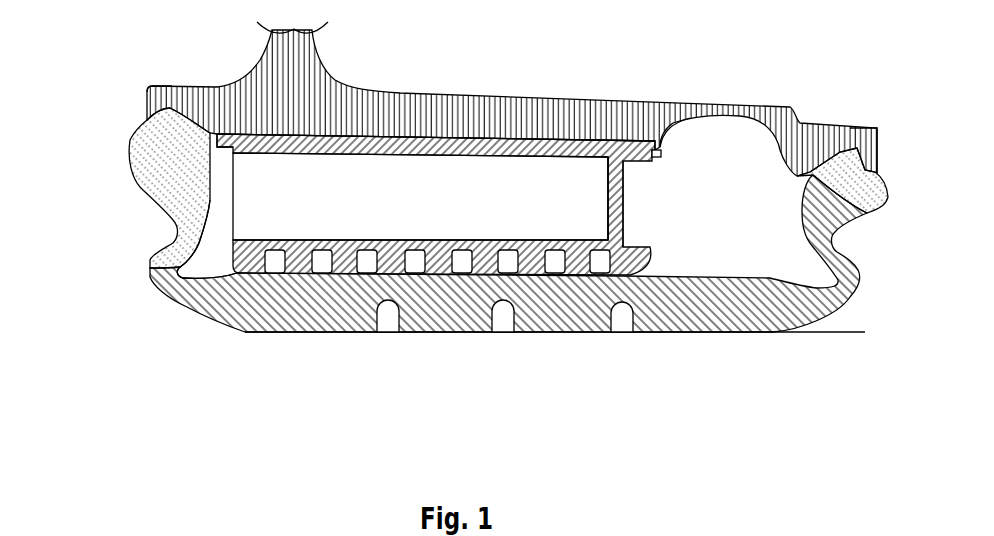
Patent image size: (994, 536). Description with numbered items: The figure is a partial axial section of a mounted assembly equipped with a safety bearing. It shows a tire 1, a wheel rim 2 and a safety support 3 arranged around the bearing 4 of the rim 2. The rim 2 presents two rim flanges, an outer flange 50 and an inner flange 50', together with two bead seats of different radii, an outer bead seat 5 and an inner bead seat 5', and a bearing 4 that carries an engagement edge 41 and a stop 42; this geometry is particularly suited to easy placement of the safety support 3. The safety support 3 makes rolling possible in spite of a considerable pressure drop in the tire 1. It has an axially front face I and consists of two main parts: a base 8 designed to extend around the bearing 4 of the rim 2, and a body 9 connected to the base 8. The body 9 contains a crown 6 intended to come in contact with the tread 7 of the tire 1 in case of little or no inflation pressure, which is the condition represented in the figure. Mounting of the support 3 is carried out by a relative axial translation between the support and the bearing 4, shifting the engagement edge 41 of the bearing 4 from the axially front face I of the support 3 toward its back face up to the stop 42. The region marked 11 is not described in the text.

The tire 1 is at (257, 343).
The wheel rim 2 is at (690, 82).
The safety support 3 is at (335, 195).
The bearing 4 is at (477, 137).
The engagement edge 41 is at (217, 133).
The stop 42 is at (661, 148).
The outer bead seat 5 is at (171, 150).
The inner bead seat 5' is at (842, 127).
The outer rim flange 50 is at (104, 98).
The inner rim flange 50' is at (868, 124).
The crown 6 is at (575, 248).
The tread 7 is at (677, 308).
The base 8 is at (543, 150).
The body 9 is at (608, 202).
The channel 11 is at (222, 202).
The axially front face I is at (648, 186).